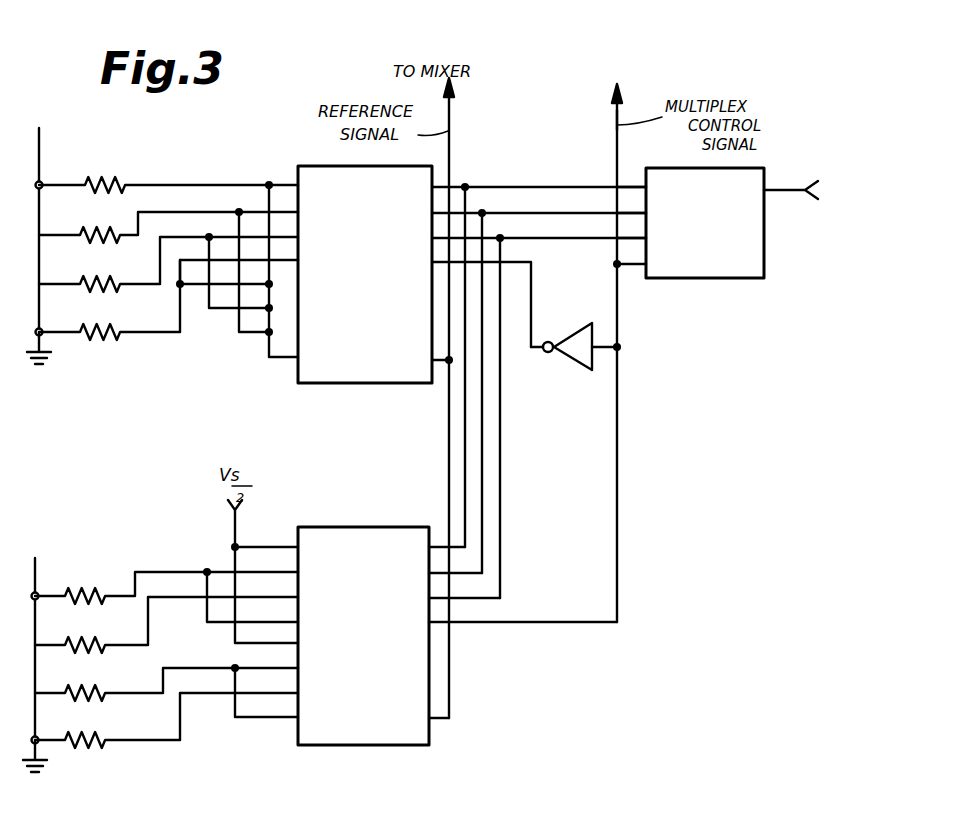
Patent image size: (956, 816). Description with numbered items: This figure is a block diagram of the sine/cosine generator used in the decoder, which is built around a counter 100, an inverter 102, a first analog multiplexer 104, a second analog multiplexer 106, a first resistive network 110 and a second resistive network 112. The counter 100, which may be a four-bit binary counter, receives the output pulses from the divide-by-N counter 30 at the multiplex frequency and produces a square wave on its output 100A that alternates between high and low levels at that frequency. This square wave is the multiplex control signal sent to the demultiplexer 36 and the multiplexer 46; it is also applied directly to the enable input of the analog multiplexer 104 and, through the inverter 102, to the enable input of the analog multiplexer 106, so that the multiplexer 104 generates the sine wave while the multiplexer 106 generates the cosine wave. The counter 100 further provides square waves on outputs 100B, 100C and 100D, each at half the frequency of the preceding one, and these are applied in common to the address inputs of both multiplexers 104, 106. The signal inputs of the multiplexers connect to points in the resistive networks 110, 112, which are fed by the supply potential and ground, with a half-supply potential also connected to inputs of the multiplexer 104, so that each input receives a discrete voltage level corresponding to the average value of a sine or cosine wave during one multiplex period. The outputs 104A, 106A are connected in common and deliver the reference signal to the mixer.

The counter 100 is at (687, 168).
The output 100A is at (648, 266).
The output 100B is at (650, 241).
The output 100C is at (651, 216).
The output 100D is at (651, 191).
The inverter 102 is at (584, 372).
The first analog multiplexer 104 is at (393, 527).
The output 104A is at (416, 724).
The second analog multiplexer 106 is at (378, 166).
The output 106A is at (419, 364).
The first resistive network 110 is at (50, 684).
The second resistive network 112 is at (52, 272).
The divide-by-N counter 30 is at (830, 199).
The demultiplexer 36 is at (642, 331).
The multiplexer 46 is at (682, 96).